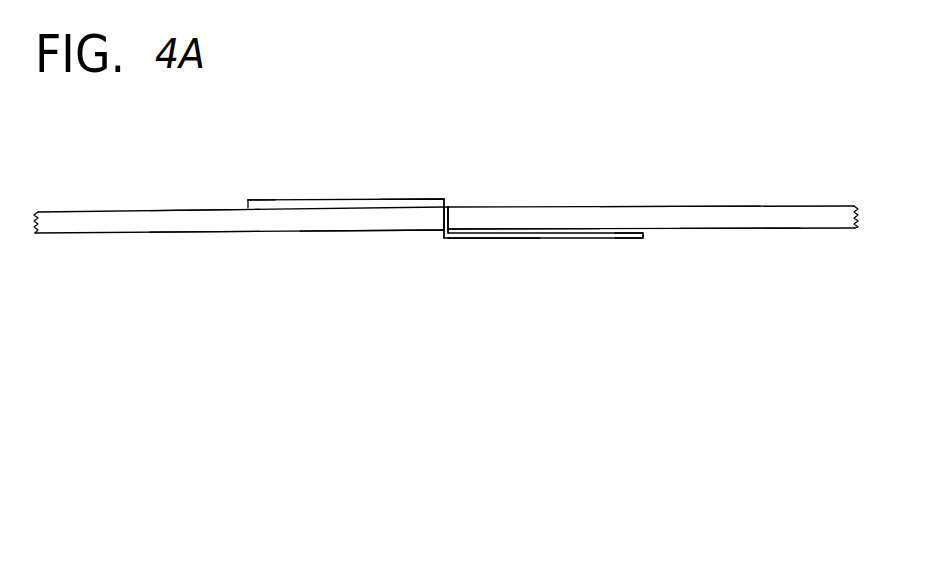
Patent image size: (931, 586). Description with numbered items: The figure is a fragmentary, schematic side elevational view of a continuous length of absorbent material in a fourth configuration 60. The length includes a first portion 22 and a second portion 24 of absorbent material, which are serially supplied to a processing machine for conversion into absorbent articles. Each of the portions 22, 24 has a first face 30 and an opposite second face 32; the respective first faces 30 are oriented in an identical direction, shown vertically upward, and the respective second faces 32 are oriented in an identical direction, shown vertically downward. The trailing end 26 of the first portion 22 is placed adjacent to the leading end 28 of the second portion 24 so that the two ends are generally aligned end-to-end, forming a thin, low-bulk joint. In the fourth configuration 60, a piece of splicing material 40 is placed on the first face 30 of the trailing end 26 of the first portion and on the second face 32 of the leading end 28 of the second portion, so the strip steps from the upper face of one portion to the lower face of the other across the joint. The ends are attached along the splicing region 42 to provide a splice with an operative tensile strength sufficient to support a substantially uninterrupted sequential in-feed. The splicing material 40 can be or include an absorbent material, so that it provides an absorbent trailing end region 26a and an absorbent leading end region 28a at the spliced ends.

The first portion of absorbent material 22 is at (122, 209).
The second portion of absorbent material 24 is at (777, 206).
The trailing end of the first portion 26 is at (368, 232).
The absorbent trailing end region 26a is at (503, 243).
The leading end of the second portion 28 is at (535, 238).
The absorbent leading end region 28a is at (408, 198).
The first face 30 is at (210, 209).
The second face 32 is at (200, 233).
The splicing material 40 is at (366, 199).
The overlapped splicing region 42 is at (296, 193).
The fourth configuration 60 is at (480, 172).